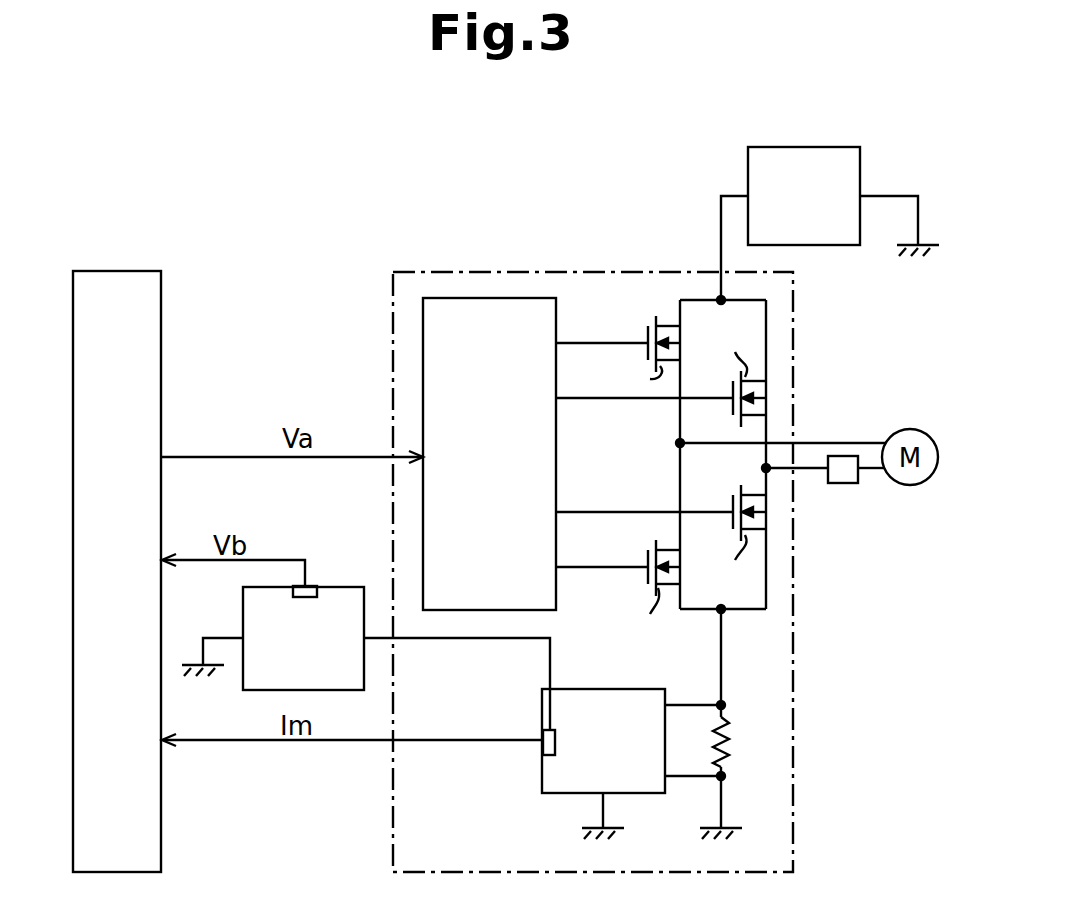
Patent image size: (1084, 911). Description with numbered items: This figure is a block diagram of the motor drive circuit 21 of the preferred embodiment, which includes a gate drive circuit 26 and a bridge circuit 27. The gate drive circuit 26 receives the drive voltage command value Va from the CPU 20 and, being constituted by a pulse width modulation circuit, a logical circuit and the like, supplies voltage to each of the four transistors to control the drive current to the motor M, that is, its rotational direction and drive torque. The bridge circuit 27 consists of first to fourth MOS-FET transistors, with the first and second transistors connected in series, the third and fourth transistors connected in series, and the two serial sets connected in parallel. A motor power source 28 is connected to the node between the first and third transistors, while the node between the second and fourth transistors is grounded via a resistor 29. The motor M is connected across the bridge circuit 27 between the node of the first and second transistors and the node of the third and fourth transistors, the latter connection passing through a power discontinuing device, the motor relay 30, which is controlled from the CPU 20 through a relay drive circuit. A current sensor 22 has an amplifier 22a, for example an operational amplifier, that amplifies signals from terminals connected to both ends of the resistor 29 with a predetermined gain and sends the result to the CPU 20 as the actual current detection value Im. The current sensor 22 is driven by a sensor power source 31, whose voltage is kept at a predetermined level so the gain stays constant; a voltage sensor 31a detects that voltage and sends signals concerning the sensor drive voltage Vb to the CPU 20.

The CPU 20 is at (119, 271).
The motor drive circuit 21 is at (552, 271).
The current sensor 22 is at (643, 689).
The amplifier 22a is at (548, 758).
The gate drive circuit 26 is at (473, 298).
The bridge circuit 27 is at (668, 290).
The motor power source 28 is at (813, 147).
The resistor 29 is at (730, 742).
The motor relay 30 is at (842, 483).
The sensor power source 31 is at (350, 587).
The voltage sensor 31a is at (293, 590).